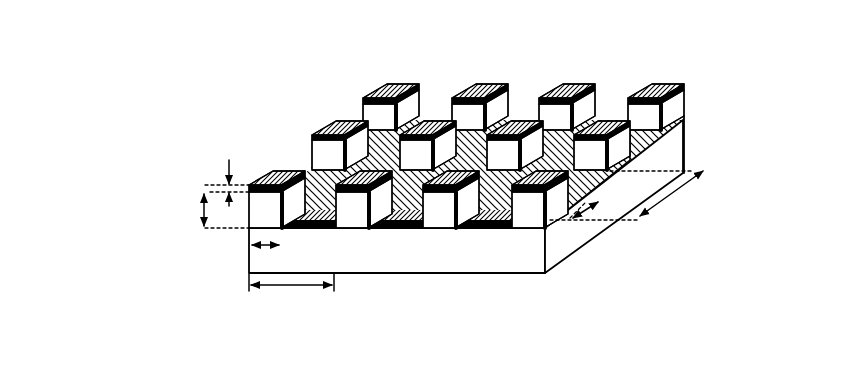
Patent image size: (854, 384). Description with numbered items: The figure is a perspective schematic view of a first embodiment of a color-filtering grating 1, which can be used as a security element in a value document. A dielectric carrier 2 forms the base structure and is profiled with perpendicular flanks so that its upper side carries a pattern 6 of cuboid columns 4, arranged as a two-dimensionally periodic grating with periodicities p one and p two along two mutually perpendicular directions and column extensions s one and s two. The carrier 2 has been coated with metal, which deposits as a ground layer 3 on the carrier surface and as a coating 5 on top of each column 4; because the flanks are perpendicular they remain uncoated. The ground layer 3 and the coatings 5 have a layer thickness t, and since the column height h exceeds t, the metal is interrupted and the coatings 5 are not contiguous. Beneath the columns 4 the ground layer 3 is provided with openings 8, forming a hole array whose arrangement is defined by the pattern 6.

The color-filtering grating 1 is at (176, 124).
The carrier 2 is at (527, 263).
The ground layer 3 is at (487, 210).
The column 4 is at (684, 104).
The coating 5 is at (653, 83).
The pattern 6 is at (502, 60).
The opening 8 is at (353, 225).